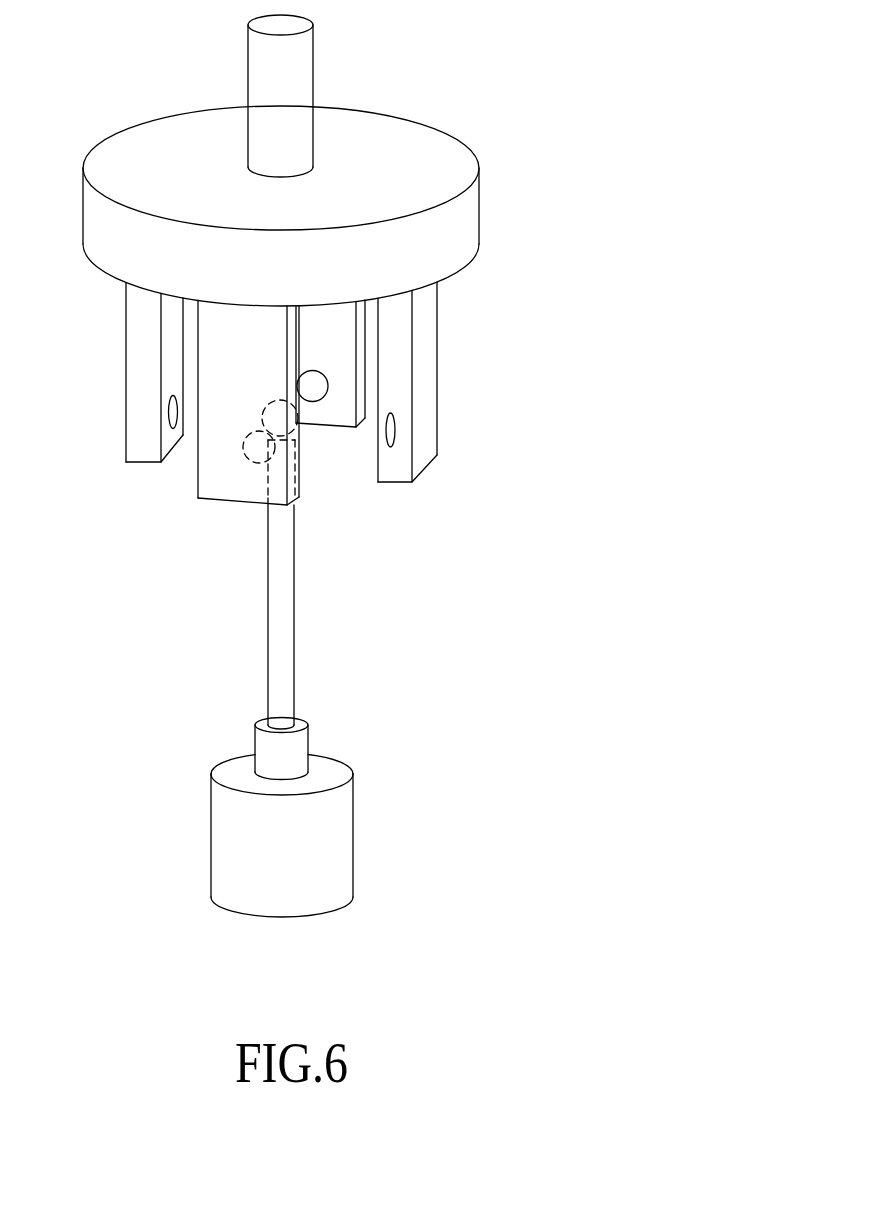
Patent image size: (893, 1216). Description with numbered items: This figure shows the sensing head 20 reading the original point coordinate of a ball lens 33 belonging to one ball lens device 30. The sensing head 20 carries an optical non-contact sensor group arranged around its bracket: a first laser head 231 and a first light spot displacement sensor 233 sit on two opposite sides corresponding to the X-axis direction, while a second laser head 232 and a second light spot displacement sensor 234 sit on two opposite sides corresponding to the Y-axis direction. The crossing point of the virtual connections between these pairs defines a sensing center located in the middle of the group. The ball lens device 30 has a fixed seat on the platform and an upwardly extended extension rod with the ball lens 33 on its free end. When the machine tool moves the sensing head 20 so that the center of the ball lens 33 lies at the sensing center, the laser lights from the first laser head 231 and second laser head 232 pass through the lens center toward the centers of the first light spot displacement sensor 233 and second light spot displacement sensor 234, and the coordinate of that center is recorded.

The sensing head 20 is at (484, 91).
The ball lens device 30 is at (402, 725).
The ball lens 33 is at (262, 408).
The first laser head 231 is at (171, 405).
The second laser head 232 is at (328, 380).
The first light spot displacement sensor 233 is at (392, 424).
The second light spot displacement sensor 234 is at (253, 460).